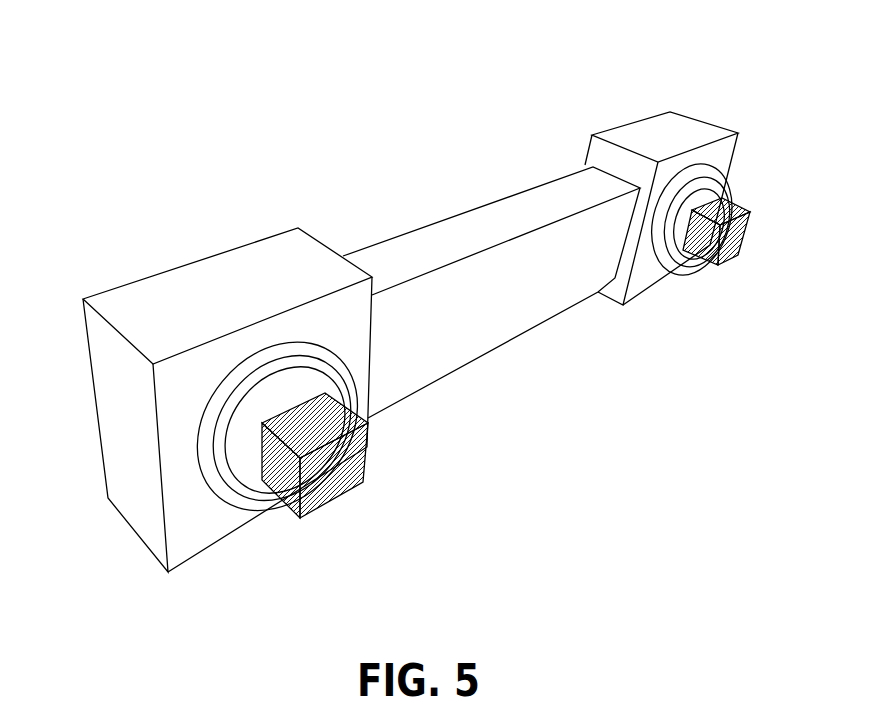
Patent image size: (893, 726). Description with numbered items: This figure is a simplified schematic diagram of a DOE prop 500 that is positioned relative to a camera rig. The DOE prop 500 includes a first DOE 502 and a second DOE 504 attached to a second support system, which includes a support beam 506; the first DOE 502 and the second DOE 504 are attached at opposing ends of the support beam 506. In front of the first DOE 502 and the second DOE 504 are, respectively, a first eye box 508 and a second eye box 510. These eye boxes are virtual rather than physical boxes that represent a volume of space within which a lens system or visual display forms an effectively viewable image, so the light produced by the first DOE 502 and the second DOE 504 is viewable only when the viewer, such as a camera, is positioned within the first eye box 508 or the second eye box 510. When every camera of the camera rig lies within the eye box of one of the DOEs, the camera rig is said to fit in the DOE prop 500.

The DOE prop 500 is at (306, 134).
The first DOE 502 is at (207, 277).
The second DOE 504 is at (648, 138).
The support beam 506 is at (427, 248).
The first eye box 508 is at (328, 505).
The second eye box 510 is at (712, 267).